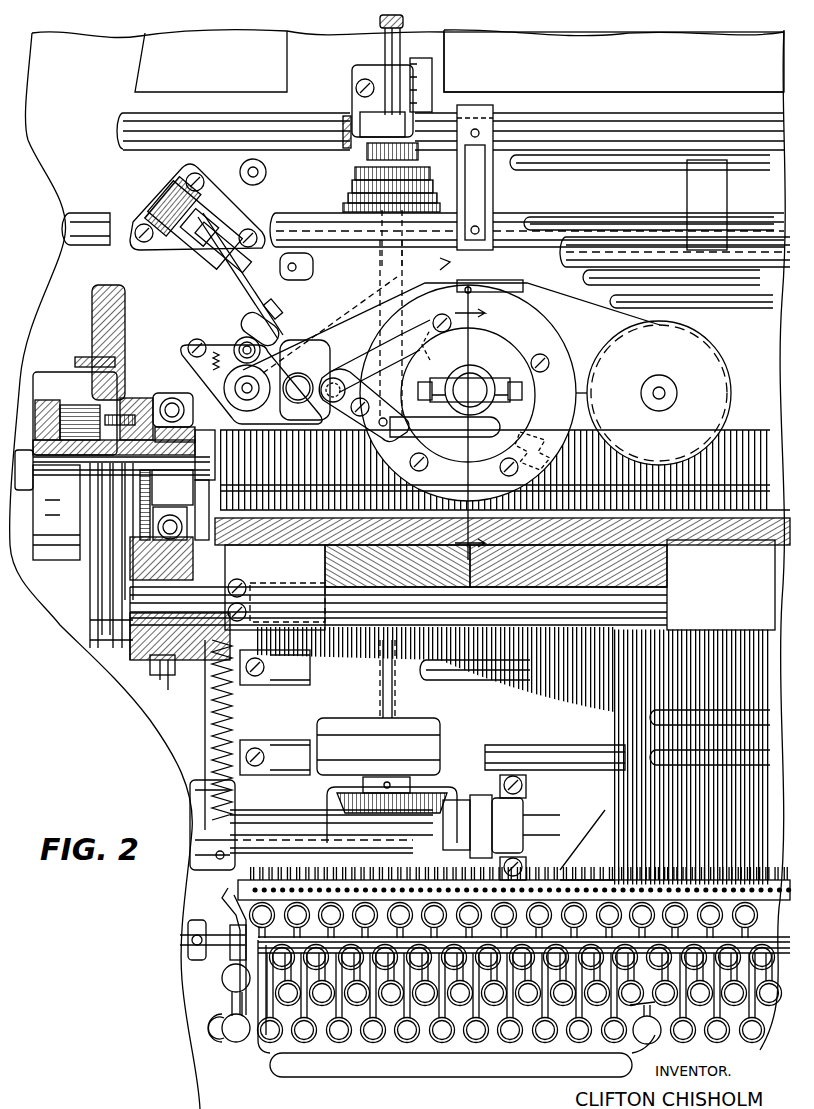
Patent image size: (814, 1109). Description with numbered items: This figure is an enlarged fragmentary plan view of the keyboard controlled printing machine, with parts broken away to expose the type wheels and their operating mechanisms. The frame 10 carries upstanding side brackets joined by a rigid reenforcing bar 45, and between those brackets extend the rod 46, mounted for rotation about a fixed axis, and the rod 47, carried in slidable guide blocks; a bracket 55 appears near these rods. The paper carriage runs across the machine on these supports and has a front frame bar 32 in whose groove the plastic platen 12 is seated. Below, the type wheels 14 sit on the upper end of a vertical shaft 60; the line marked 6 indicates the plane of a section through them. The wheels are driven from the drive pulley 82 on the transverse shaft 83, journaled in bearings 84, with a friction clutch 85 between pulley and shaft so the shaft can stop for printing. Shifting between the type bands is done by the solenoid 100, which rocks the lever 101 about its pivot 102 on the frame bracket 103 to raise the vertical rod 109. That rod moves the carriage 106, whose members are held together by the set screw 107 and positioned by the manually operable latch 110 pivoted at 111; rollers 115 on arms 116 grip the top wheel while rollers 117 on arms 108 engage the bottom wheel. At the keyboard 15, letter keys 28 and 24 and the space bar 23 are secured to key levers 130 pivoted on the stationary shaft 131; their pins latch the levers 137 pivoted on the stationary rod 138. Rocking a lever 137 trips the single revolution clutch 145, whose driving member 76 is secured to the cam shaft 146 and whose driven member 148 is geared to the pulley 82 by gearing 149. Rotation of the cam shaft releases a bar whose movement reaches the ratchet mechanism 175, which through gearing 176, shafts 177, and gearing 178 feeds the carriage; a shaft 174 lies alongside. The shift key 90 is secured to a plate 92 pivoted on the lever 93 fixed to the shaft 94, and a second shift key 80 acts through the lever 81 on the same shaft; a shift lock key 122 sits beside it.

The frame 10 is at (172, 1032).
The reenforcing bar 45 is at (614, 62).
The rod 46 is at (243, 118).
The shafts 177 is at (392, 52).
The gearing 178 is at (357, 180).
The platen 12 is at (530, 260).
The frame member or bar 32 is at (588, 172).
The bracket 55 is at (495, 186).
The rod 47 is at (105, 216).
The solenoid 100 is at (168, 207).
The lever 101 is at (255, 276).
The pivot 102 is at (280, 308).
The frame bracket or post 103 is at (250, 318).
The rod 109 is at (251, 380).
The set screw 107 is at (296, 378).
The carriage 106 is at (340, 375).
The manually operable latch 110 is at (380, 356).
The pivot 111 is at (395, 330).
The type wheels 14 is at (550, 326).
The section line 6— 6 is at (477, 422).
The shaft 60 is at (470, 390).
The arms 116 is at (455, 378).
The rollers 115 is at (434, 378).
The rollers 117 is at (488, 391).
The arms 108 is at (618, 433).
The levers 137 is at (668, 565).
The key lever 130 is at (616, 790).
The cam shaft 146 is at (672, 602).
The stationary rod 138 is at (487, 678).
The stationary shaft 131 is at (566, 746).
The drive pulley 82 is at (95, 318).
The friction clutch 85 is at (58, 372).
The gearing 149 is at (148, 400).
The bearings 84 is at (190, 428).
The shaft 83 is at (28, 493).
The single revolution clutch 145 is at (135, 635).
The driving member 76 is at (150, 640).
The driven member 148 is at (150, 668).
The ratchet mechanism 175 is at (200, 790).
The shaft 174 is at (295, 822).
The gearing 176 is at (452, 796).
The keyboard 15 is at (255, 1077).
The key 24 is at (706, 919).
The key 80 is at (632, 1045).
The lever 81 is at (650, 1002).
The space key or bar 23 is at (376, 1068).
The key 28 is at (512, 1048).
The lever 93 is at (224, 905).
The shaft 94 is at (187, 942).
The shift lock key 122 is at (221, 980).
The plate 92 is at (225, 1000).
The shift key 90 is at (224, 1014).